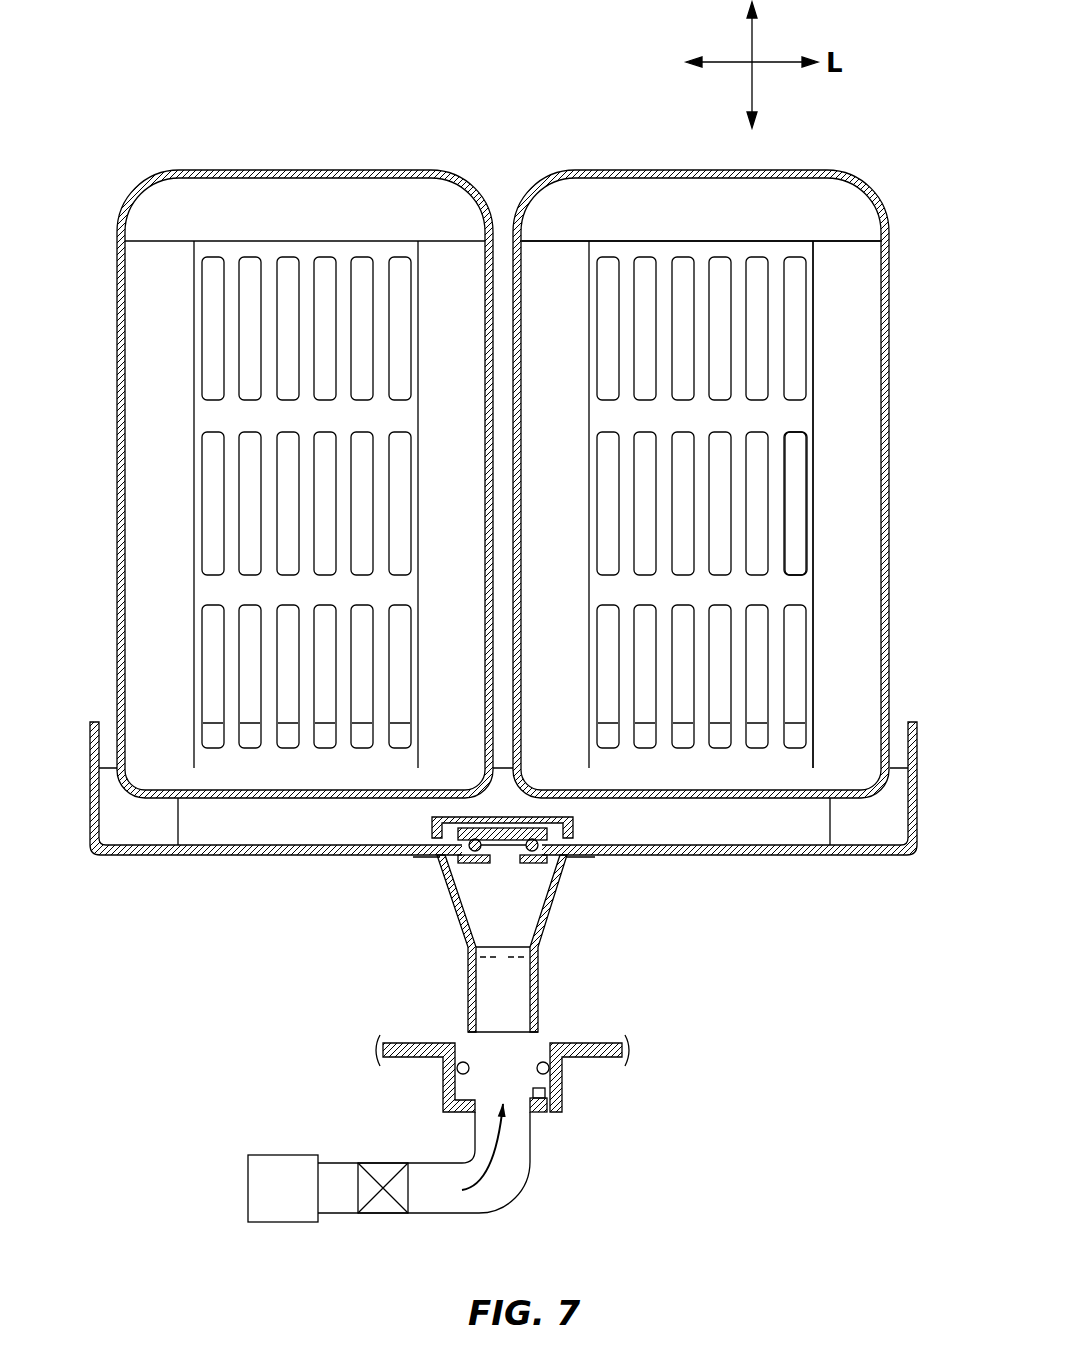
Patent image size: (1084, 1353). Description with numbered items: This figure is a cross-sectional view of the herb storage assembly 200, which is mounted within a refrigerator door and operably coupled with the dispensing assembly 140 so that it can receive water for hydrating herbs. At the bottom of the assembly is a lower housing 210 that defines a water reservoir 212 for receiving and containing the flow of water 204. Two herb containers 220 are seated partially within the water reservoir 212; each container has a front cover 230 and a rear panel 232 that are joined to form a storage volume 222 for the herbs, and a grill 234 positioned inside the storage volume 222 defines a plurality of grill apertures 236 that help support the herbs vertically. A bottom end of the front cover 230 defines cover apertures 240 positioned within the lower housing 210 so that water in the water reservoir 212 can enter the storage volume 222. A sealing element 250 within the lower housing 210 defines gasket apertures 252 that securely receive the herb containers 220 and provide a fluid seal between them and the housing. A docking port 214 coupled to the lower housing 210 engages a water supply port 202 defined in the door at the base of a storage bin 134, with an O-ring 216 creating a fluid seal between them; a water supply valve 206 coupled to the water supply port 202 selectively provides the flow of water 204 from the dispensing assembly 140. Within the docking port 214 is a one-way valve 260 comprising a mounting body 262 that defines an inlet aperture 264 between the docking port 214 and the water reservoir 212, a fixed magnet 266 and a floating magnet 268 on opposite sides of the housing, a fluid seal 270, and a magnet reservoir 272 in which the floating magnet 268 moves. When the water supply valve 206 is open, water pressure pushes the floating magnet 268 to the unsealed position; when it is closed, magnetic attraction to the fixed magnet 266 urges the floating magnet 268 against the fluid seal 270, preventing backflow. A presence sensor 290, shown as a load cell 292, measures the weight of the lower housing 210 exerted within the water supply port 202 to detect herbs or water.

The herb storage assembly 200 is at (102, 146).
The herb container 220 is at (883, 177).
The front cover 230 is at (580, 168).
The rear panel 232 is at (630, 215).
The grill 234 is at (862, 295).
The storage volume 222 is at (856, 411).
The grill apertures 236 is at (802, 535).
The sealing element 250 is at (107, 768).
The gasket apertures 252 is at (113, 784).
The cover apertures 240 is at (188, 802).
The lower housing 210 is at (917, 795).
The water reservoir 212 is at (864, 824).
The floating magnet 268 is at (508, 820).
The fluid seal 270 is at (448, 827).
The mounting body 262 is at (574, 818).
The one-way valve 260 is at (472, 860).
The inlet aperture 264 is at (503, 858).
The magnet reservoir 272 is at (553, 860).
The fixed magnet 266 is at (558, 878).
The docking port 214 is at (540, 986).
The O-ring 216 is at (462, 1045).
The water supply port 202 is at (554, 1082).
The load cell 292 is at (548, 1093).
The presence sensor 290 is at (539, 1108).
The flow of water 204 is at (502, 1172).
The water supply valve 206 is at (385, 1210).
The storage bin 134 is at (410, 1058).
The dispensing assembly 140 is at (303, 1199).